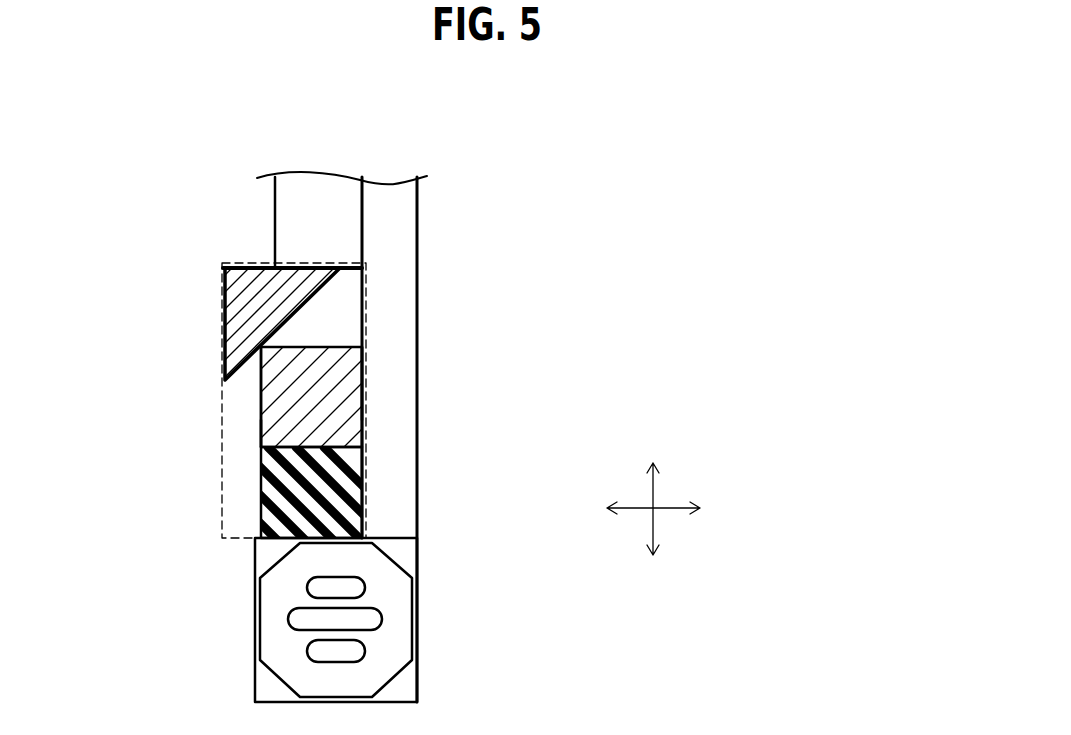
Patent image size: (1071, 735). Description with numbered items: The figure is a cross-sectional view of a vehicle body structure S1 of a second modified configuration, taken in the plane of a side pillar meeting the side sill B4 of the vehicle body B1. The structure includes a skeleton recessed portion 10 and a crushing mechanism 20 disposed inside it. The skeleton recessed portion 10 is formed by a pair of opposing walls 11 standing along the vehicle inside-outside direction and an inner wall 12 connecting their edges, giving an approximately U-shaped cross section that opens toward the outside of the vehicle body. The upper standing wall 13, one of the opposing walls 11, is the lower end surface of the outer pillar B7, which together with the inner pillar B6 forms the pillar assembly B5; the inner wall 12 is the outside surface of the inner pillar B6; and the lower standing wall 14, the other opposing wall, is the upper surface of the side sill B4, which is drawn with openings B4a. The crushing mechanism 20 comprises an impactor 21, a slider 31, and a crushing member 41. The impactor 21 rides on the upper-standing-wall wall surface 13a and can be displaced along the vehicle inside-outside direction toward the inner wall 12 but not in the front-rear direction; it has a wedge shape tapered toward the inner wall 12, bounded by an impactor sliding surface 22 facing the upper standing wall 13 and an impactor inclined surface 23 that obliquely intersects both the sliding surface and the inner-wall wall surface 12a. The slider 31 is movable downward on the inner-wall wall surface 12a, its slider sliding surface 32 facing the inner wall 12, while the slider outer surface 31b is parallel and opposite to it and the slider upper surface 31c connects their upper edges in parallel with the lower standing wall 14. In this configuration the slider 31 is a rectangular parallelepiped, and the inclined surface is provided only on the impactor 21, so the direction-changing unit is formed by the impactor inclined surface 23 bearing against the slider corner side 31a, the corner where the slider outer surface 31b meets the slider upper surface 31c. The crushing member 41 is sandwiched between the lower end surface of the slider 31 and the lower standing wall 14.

The vehicle body structure S1 is at (189, 158).
The vehicle body B1 is at (413, 133).
The side sill B4 is at (417, 568).
The hole B4a is at (392, 613).
The body panel assembly B5 is at (342, 392).
The inner pillar B6 is at (388, 202).
The outer pillar B7 is at (315, 202).
The skeleton recessed portion 10 is at (346, 268).
The opposing walls 11 is at (366, 246).
The inner wall 12 is at (352, 308).
The inner-wall wall surface 12a is at (360, 481).
The upper standing wall 13 is at (366, 246).
The upper-standing-wall wall surface 13a is at (223, 269).
The lower standing wall 14 is at (293, 545).
The crushing mechanism 20 is at (222, 410).
The impactor 21 is at (258, 304).
The impactor sliding surface 22 is at (318, 268).
The impactor inclined surface 23 is at (185, 331).
The slider 31 is at (347, 422).
The slider corner side 31a is at (258, 343).
The slider outer surface 31b is at (262, 420).
The slider upper surface 31c is at (330, 340).
The slider sliding surface 32 is at (362, 383).
The crushing member 41 is at (293, 538).